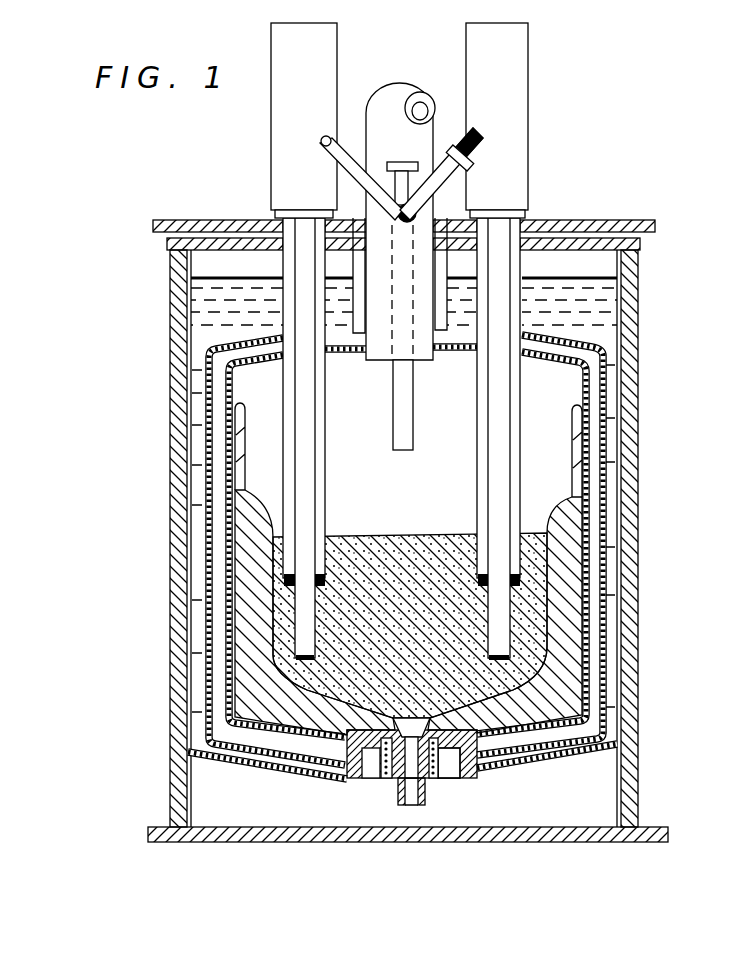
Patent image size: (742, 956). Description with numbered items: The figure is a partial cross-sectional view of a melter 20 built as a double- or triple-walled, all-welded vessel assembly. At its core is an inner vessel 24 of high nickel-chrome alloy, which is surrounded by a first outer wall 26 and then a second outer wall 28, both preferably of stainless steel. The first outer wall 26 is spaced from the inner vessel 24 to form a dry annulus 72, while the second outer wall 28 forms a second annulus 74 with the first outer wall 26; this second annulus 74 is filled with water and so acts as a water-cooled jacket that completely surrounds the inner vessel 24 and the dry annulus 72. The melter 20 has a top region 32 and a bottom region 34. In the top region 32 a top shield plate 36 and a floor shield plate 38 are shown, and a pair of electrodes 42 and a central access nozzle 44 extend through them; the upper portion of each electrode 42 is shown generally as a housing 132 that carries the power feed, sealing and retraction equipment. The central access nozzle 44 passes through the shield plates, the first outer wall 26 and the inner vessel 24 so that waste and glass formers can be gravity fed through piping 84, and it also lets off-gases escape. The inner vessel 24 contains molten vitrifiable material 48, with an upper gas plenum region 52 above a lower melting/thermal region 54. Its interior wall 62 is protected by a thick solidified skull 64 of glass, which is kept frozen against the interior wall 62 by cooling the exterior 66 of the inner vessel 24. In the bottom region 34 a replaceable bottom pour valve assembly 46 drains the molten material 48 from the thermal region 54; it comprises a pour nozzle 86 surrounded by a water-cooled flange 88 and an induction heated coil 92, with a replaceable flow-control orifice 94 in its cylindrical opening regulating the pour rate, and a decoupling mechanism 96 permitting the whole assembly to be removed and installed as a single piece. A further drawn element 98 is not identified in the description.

The melter 20 is at (645, 117).
The inner vessel 24 is at (595, 390).
The first outer wall 26 is at (605, 587).
The second outer wall 28 is at (612, 565).
The top region 32 is at (170, 284).
The bottom region 34 is at (642, 811).
The top shield plate 36 is at (623, 262).
The floor shield plate 38 is at (627, 220).
The electrode 42 is at (328, 503).
The central access nozzle 44 is at (390, 103).
The bottom pour valve assembly 46 is at (373, 767).
The molten vitrifiable material 48 is at (380, 550).
The gas plenum region 52 is at (455, 474).
The melting/thermal region 54 is at (433, 573).
The interior wall 62 is at (408, 569).
The skull 64 is at (255, 655).
The exterior 66 is at (578, 433).
The dry annulus 72 is at (597, 650).
The second annulus 74 is at (202, 571).
The piping 84 is at (340, 160).
The pour nozzle 86 is at (405, 765).
The water-cooled flange 88 is at (350, 762).
The induction heated coil 92 is at (430, 775).
The flow-control orifice 94 is at (402, 805).
The decoupling mechanism 96 is at (435, 752).
The bottom liner 98 is at (500, 762).
The housing 132 is at (285, 127).